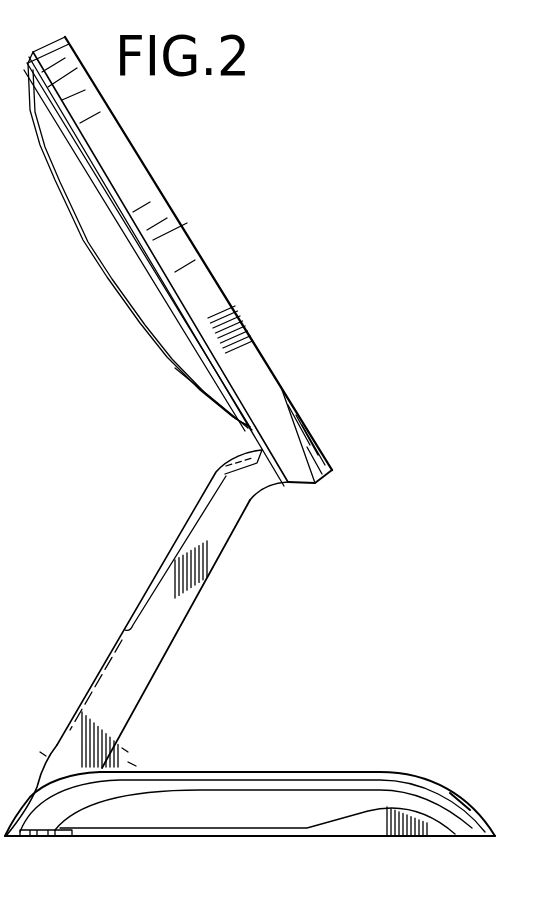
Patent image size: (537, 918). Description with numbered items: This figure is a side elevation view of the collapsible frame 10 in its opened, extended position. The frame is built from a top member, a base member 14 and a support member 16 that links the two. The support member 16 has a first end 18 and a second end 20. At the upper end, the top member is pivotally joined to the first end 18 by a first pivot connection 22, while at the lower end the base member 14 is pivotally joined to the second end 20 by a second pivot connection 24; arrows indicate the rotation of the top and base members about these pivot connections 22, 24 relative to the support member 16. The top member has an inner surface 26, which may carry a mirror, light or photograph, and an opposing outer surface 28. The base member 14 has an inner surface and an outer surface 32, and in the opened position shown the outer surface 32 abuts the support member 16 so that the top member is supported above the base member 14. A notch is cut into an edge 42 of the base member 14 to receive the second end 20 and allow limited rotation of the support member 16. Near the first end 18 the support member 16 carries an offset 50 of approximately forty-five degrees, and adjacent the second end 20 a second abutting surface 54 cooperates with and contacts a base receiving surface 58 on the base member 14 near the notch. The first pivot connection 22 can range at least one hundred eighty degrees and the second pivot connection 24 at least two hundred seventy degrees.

The collapsible frame 10 is at (6, 237).
The base member 14 is at (9, 569).
The support member 16 is at (152, 663).
The first end 18 is at (265, 463).
The second end 20 is at (84, 767).
The first pivot connection 22 is at (241, 430).
The second pivot connection 24 is at (39, 743).
The inner surface 26 is at (215, 278).
The outer surface 28 is at (117, 262).
The outer surface 32 is at (342, 772).
The edge 42 is at (9, 542).
The offset 50 is at (220, 447).
The second abutting surface 54 is at (131, 743).
The base receiving surface 58 is at (138, 757).